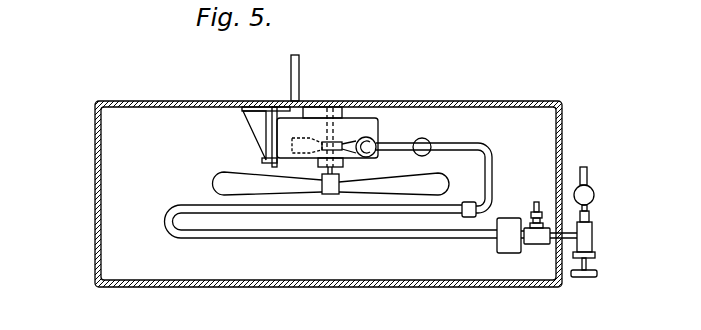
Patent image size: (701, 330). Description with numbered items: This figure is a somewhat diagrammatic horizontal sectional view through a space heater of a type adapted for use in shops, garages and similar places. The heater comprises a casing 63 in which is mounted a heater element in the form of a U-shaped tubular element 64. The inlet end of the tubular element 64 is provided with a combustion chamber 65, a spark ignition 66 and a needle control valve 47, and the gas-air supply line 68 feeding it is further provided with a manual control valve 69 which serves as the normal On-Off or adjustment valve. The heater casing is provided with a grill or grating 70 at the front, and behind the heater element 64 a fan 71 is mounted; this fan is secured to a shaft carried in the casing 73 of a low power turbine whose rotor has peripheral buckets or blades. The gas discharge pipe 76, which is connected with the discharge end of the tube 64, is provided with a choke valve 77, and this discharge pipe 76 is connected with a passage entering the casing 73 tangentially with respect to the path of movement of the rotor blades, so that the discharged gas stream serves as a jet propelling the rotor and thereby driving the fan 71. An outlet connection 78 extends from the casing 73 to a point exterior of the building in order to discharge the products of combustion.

The valve 47 is at (592, 237).
The casing 63 is at (95, 176).
The U-shaped tubular element 64 is at (238, 240).
The combustion chamber 65 is at (506, 253).
The spark ignition 66 is at (535, 201).
The gas-air supply line 68 is at (587, 173).
The manual control valve 69 is at (594, 194).
The grill or grating 70 is at (333, 283).
The fan 71 is at (216, 174).
The casing of low power turbine 73 is at (357, 117).
The gas discharge pipe 76 is at (492, 143).
The choke valve 77 is at (425, 138).
The outlet connection 78 is at (299, 64).